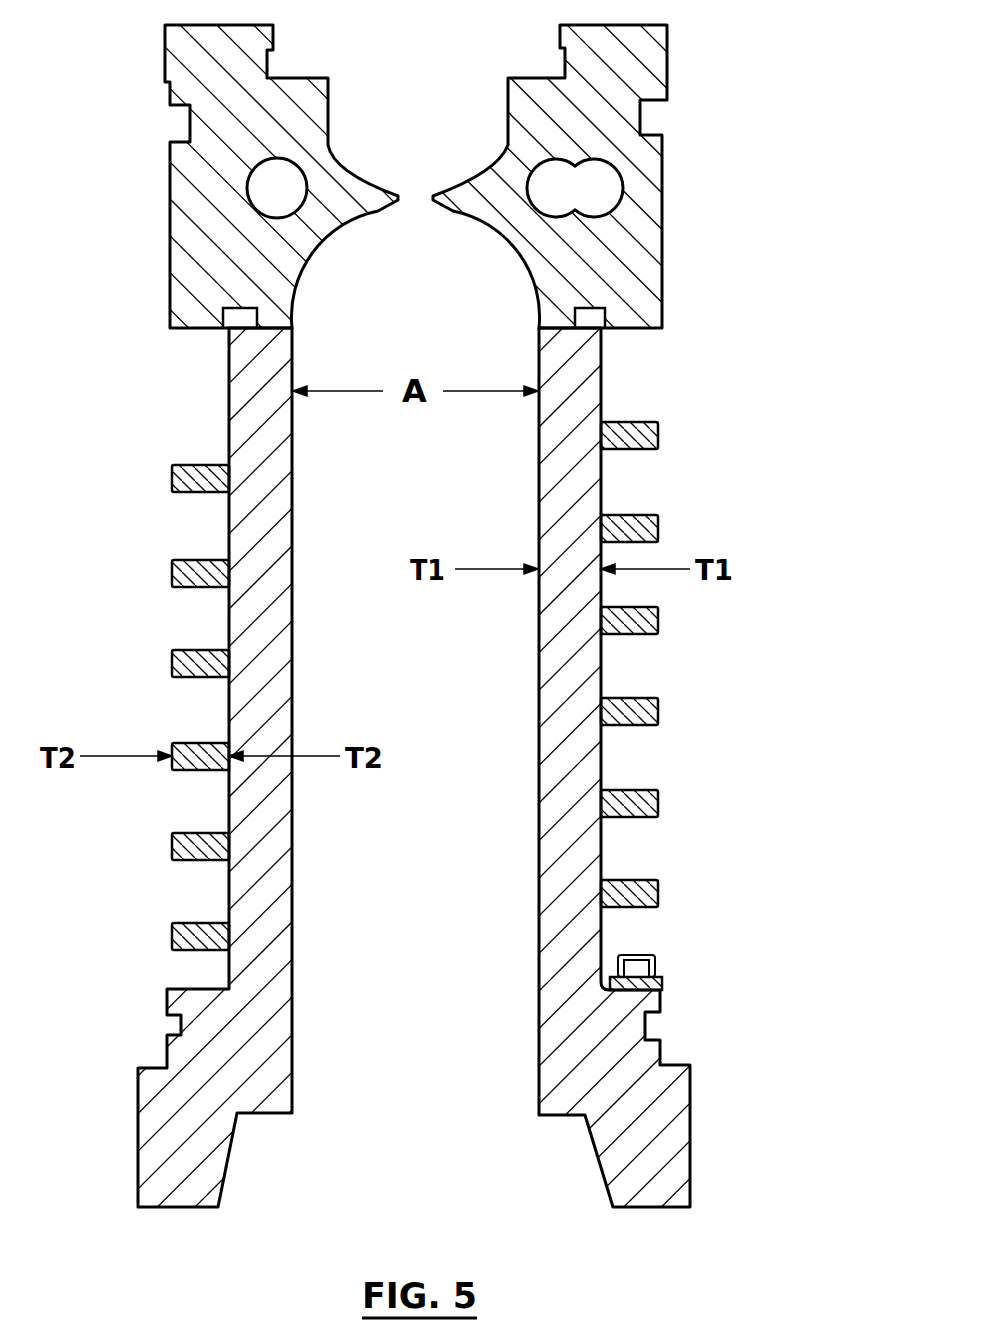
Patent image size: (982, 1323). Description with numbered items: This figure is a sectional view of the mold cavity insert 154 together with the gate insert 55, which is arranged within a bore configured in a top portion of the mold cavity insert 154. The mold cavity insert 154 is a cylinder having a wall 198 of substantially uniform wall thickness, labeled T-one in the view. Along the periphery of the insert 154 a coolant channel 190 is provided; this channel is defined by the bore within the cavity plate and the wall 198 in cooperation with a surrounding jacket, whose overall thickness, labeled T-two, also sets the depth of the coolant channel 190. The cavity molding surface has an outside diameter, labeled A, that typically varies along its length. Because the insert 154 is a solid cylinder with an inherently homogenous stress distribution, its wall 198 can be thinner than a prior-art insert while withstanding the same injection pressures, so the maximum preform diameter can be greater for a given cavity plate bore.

The gate insert 55 is at (632, 58).
The wall 198 is at (572, 672).
The coolant channel 190 is at (632, 848).
The mold cavity insert 154 is at (660, 1112).